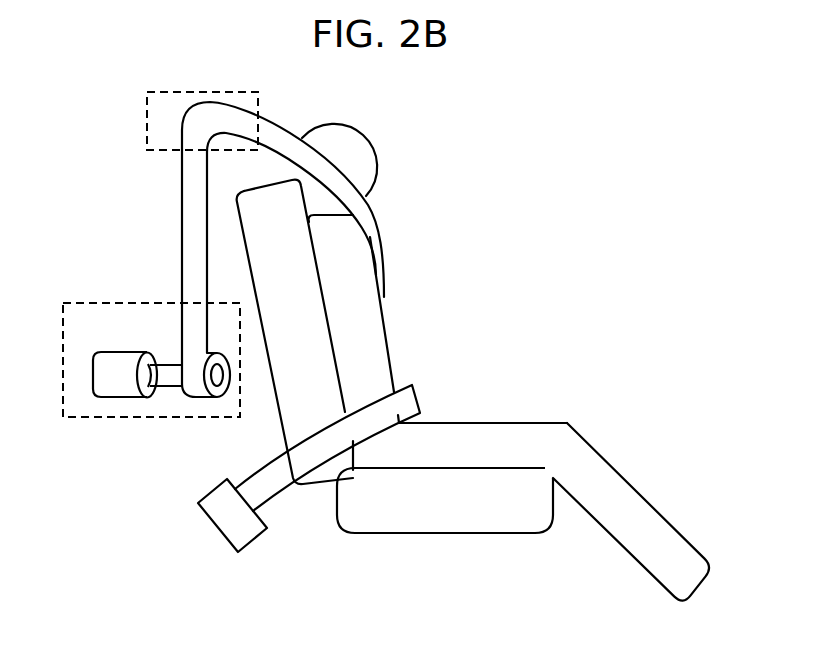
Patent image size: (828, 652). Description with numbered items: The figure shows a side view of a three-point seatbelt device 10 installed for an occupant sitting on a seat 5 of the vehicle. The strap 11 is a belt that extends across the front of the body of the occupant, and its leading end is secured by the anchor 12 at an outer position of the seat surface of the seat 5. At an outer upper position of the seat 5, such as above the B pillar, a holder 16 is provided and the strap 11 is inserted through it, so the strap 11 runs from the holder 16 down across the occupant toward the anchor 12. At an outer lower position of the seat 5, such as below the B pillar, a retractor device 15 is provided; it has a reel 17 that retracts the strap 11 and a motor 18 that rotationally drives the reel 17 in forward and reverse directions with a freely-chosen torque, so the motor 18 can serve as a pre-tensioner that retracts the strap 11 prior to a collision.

The seatbelt device 10 is at (506, 195).
The seat 5 is at (417, 513).
The strap 11 is at (386, 265).
The anchor 12 is at (232, 523).
The retractor device 15 is at (130, 305).
The holder 16 is at (147, 125).
The reel 17 is at (217, 390).
The motor 18 is at (125, 383).